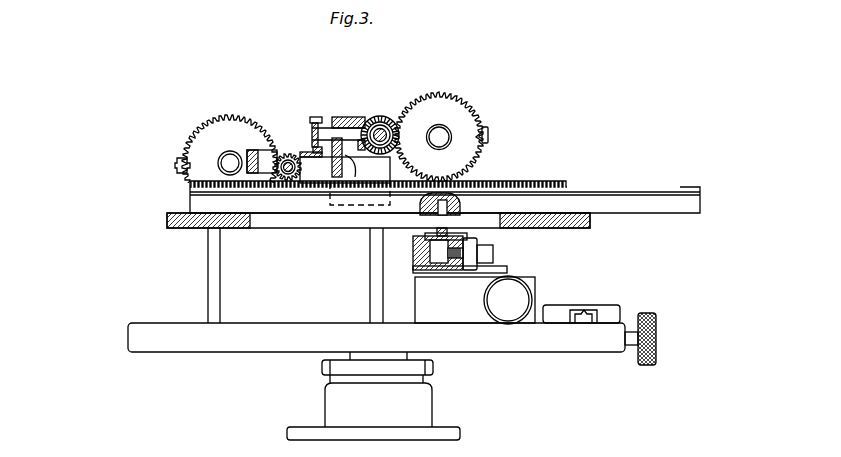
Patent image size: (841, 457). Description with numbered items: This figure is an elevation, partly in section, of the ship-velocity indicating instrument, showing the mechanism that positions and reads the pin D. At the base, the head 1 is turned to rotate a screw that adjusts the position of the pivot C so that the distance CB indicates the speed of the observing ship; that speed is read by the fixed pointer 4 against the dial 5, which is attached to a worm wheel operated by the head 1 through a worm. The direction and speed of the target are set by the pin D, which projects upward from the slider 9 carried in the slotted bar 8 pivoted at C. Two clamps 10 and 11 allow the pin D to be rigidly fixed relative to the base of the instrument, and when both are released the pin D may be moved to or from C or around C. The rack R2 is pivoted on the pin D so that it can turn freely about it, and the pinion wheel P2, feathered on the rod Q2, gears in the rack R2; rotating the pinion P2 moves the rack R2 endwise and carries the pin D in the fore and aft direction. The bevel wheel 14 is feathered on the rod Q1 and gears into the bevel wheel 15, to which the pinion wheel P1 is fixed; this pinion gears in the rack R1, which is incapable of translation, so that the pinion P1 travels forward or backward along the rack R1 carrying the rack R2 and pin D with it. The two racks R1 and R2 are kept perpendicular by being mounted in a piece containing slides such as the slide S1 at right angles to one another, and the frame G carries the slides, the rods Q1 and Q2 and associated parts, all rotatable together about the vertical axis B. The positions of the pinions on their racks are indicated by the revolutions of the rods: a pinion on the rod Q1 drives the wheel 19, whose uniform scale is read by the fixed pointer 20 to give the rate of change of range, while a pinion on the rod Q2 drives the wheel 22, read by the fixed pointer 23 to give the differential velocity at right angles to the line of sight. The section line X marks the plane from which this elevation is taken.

The head 1 is at (658, 323).
The fixed pointer 4 is at (589, 318).
The dial 5 is at (621, 313).
The slotted bar 8 is at (428, 256).
The slider 9 is at (468, 237).
The clamp 10 is at (479, 256).
The clamp 11 is at (483, 300).
The bevel wheel 14 is at (384, 115).
The bevel wheel 15 is at (350, 115).
The wheel 19 is at (461, 122).
The fixed pointer 20 is at (489, 138).
The wheel 22 is at (212, 130).
The fixed pointer 23 is at (176, 165).
The pin D is at (443, 217).
The frame G is at (378, 236).
The pinion wheel P1 is at (313, 118).
The pinion wheel P2 is at (308, 126).
The rod Q1 is at (375, 117).
The rod Q2 is at (289, 174).
The rack R1 is at (305, 151).
The rack R2 is at (215, 197).
The slide S1 is at (350, 160).
The foot plate X is at (507, 270).